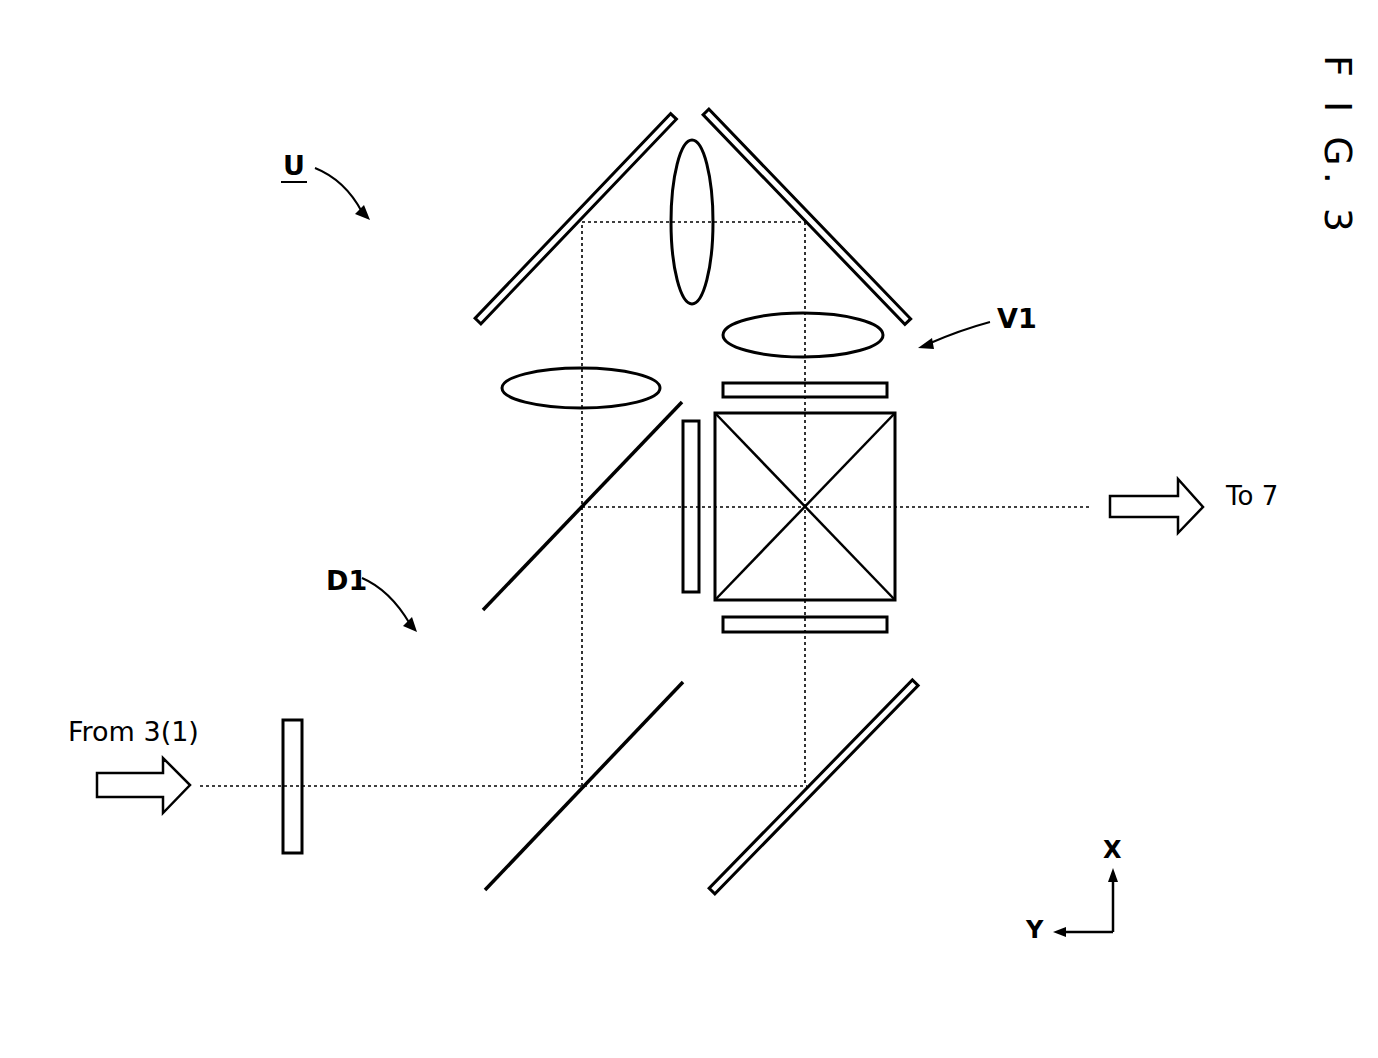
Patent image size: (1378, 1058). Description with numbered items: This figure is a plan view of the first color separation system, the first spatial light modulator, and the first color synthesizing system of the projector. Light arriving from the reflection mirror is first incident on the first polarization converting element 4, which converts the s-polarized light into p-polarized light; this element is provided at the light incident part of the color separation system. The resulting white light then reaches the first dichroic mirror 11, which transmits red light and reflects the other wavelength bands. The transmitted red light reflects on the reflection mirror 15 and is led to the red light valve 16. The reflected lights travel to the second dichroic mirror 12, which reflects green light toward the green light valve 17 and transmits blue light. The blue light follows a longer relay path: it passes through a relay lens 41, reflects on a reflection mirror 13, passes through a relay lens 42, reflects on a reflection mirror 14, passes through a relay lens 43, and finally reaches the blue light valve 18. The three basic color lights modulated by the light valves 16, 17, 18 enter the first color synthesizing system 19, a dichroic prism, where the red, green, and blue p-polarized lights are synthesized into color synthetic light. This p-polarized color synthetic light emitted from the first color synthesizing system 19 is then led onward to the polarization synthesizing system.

The first polarization converting element 4 is at (292, 718).
The first dichroic mirror 11 is at (505, 871).
The second dichroic mirror 12 is at (502, 583).
The reflection mirror 13 is at (547, 237).
The reflection mirror 14 is at (905, 302).
The reflection mirror 15 is at (745, 866).
The red light valve 16 is at (887, 625).
The green light valve 17 is at (683, 563).
The blue light valve 18 is at (887, 396).
The first color synthesizing system 19 is at (882, 477).
The relay lens 41 is at (502, 389).
The relay lens 42 is at (710, 262).
The relay lens 43 is at (725, 337).